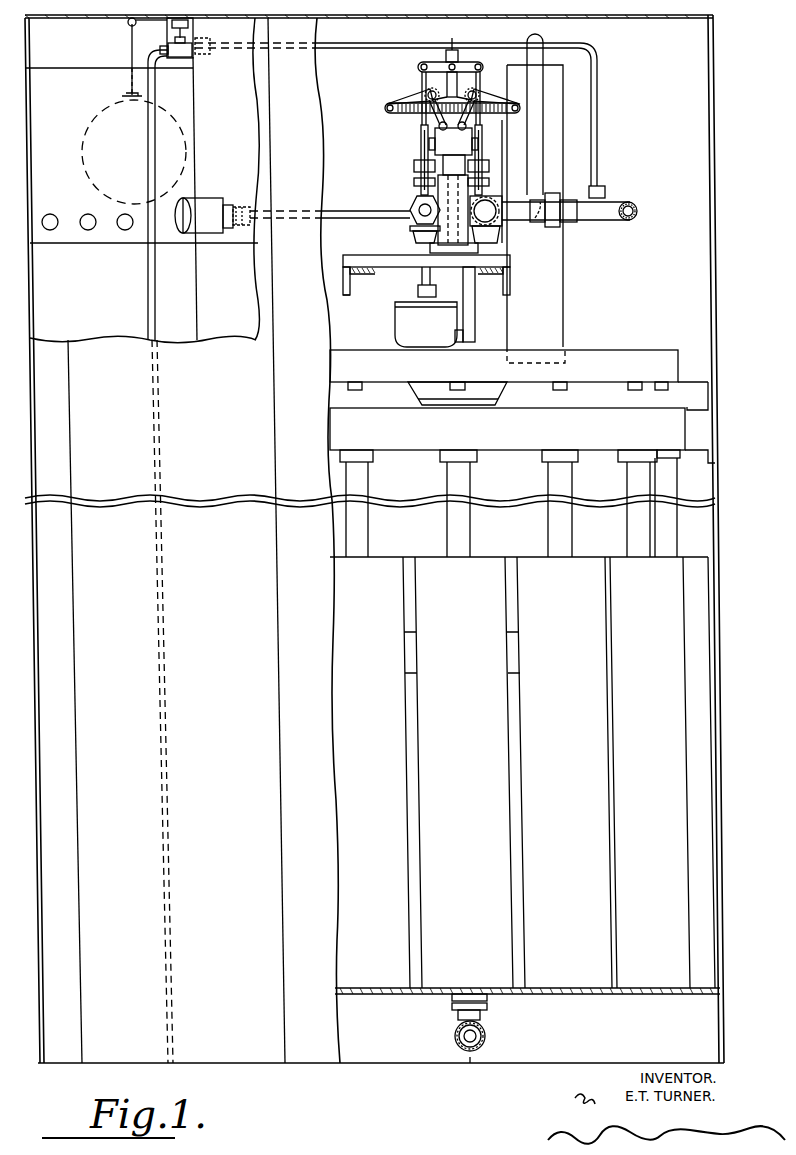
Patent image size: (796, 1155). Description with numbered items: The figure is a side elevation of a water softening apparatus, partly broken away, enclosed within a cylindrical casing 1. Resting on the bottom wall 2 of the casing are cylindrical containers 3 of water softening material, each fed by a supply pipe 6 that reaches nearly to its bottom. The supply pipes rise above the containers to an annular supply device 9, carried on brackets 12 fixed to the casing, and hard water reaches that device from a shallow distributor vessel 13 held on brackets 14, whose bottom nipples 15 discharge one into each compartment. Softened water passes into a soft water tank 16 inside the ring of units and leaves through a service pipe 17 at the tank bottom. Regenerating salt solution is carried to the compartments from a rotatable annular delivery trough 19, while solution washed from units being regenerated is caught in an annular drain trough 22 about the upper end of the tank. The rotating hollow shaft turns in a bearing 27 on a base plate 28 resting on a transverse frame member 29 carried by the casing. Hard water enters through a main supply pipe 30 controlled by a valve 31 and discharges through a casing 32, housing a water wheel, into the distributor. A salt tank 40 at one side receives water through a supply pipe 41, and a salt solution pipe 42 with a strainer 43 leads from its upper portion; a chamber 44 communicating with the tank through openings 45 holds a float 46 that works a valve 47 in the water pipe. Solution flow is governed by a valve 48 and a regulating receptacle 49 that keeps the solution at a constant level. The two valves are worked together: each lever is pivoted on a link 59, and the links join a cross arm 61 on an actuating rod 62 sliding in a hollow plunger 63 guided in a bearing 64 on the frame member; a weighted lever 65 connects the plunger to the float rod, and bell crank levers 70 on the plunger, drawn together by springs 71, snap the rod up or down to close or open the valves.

The casing 1 is at (710, 240).
The bottom wall 2 is at (460, 554).
The containers 3 is at (522, 772).
The supply pipe 6 is at (464, 480).
The annular supply device 9 is at (507, 429).
The brackets 12 is at (690, 450).
The distributor vessel 13 is at (504, 366).
The brackets 14 is at (686, 382).
The nipples 15 is at (628, 388).
The soft water tank 16 is at (513, 675).
The service pipe 17 is at (486, 1035).
The delivery trough 19 is at (495, 398).
The drain trough 22 is at (512, 650).
The bearing 27 is at (468, 305).
The base plate 28 is at (510, 262).
The transverse frame member 29 is at (347, 296).
The main supply pipe 30 is at (533, 78).
The valve 31 is at (490, 225).
The casing 32 is at (582, 142).
The salt tank 40 is at (88, 338).
The water supply pipe 41 is at (150, 290).
The salt solution pipe 42 is at (337, 225).
The strainer 43 is at (211, 218).
The chamber 44 is at (87, 204).
The openings 45 is at (88, 232).
The float 46 is at (82, 160).
The valve 47 is at (182, 58).
The valve 48 is at (410, 208).
The receptacle 49 is at (426, 324).
The link 59 is at (414, 176).
The cross arm 61 is at (418, 67).
The actuating rod 62 is at (440, 80).
The hollow plunger 63 is at (453, 151).
The bearing 64 is at (438, 233).
The lever 65 is at (420, 152).
The bell crank levers 70 is at (398, 105).
The springs 71 is at (418, 113).